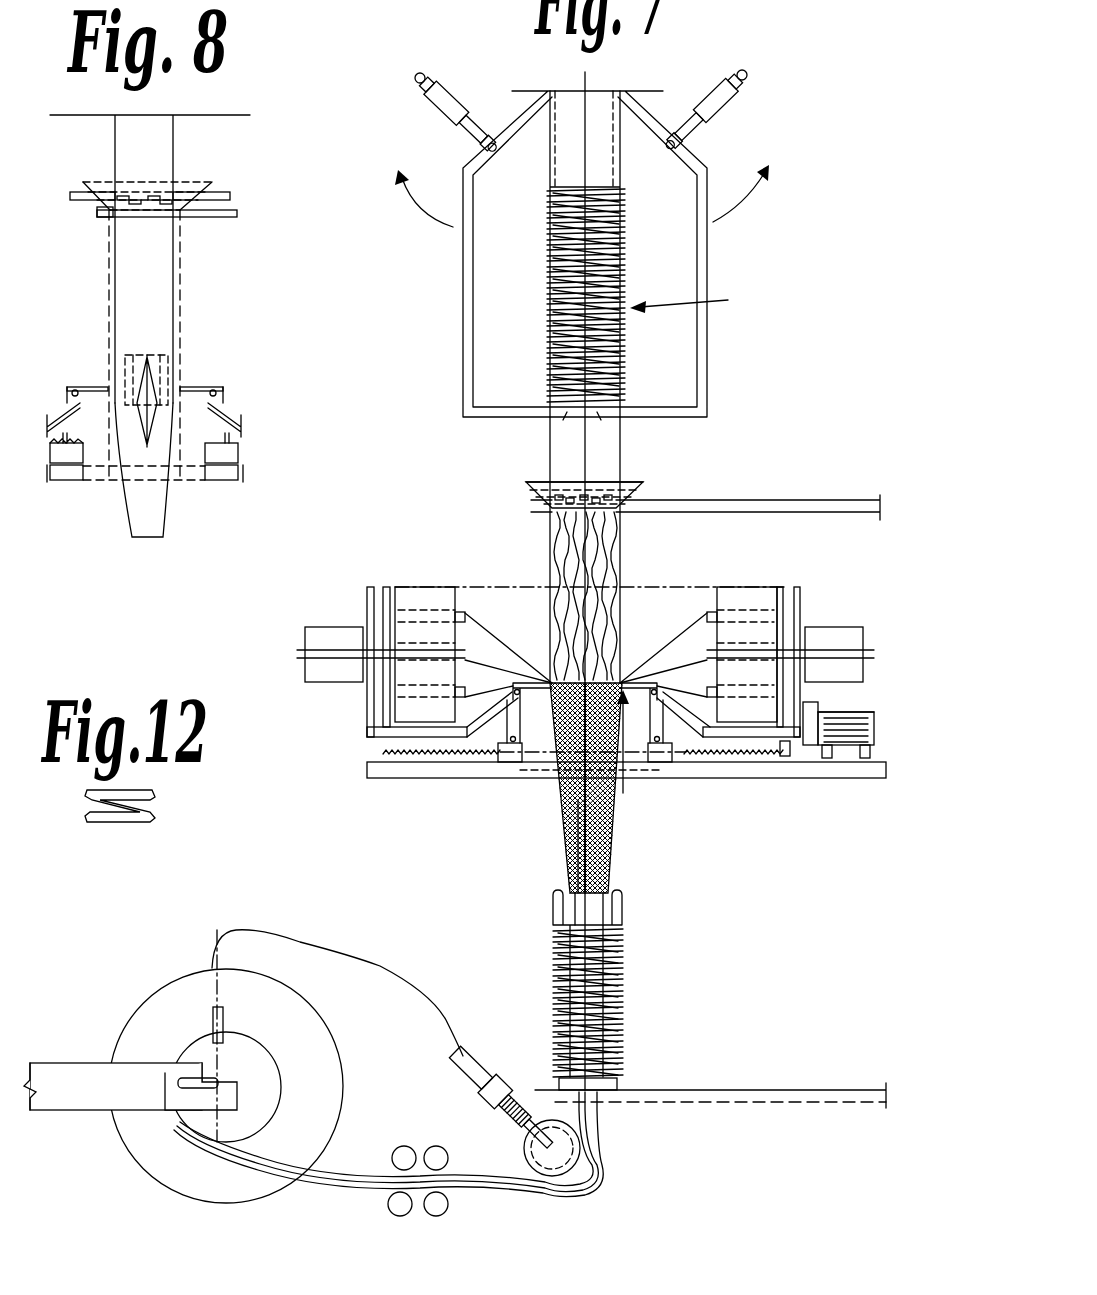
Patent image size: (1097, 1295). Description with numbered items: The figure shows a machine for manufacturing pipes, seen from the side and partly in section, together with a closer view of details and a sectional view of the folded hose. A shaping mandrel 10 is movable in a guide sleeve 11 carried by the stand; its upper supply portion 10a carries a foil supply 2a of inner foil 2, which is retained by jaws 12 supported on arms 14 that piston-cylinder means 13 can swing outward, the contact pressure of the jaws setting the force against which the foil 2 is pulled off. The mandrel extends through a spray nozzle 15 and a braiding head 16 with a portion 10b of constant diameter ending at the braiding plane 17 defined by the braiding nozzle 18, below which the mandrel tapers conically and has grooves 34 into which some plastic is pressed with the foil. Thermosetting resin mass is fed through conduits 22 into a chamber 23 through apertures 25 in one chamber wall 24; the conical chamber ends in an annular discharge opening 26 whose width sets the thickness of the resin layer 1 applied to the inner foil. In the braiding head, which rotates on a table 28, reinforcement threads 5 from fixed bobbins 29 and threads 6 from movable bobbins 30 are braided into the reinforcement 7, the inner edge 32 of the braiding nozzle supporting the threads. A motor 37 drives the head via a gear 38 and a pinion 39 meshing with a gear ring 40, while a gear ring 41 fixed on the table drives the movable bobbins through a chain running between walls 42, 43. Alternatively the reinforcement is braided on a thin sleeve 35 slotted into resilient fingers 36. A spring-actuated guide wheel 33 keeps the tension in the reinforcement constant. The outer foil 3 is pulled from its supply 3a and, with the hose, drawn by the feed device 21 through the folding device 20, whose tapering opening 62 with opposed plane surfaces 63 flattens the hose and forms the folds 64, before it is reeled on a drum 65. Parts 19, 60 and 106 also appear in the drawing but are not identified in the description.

In FIG. 7, the thermosetting resin layer 1 is at (597, 536).
In FIG. 7, the inner foil 2 is at (618, 436).
In FIG. 7, the foil supply 2a is at (692, 300).
In FIG. 7, the outer foil 3 is at (613, 906).
In FIG. 7, the foil supply 3a is at (622, 948).
In FIG. 7, the reinforcement threads 5 is at (484, 660).
In FIG. 7, the reinforcement threads 6 is at (468, 615).
In FIG. 7, the fabric reinforcement 7 is at (567, 782).
In FIG. 7, the shaping mandrel 10 is at (603, 452).
In FIG. 8, the shaping mandrel 10 is at (183, 147).
In FIG. 7, the upper portion of mandrel 10a is at (623, 238).
In FIG. 7, the mandrel portion of constant diameter 10b is at (594, 581).
In FIG. 7, the guide sleeve 11 is at (598, 108).
In FIG. 7, the jaws 12 is at (567, 412).
In FIG. 7, the piston-cylinder means 13 is at (440, 80).
In FIG. 7, the arms 14 is at (702, 257).
In FIG. 7, the spray nozzle 15 is at (655, 479).
In FIG. 7, the braiding head 16 is at (728, 581).
In FIG. 7, the braiding plane 17 is at (635, 751).
In FIG. 7, the braiding nozzle 18 is at (524, 762).
In FIG. 8, the braiding nozzle 18 is at (197, 388).
In FIG. 7, the bobbin base 19 is at (622, 1078).
In FIG. 7, the hose folding device 20 is at (640, 904).
In FIG. 7, the feed device 21 is at (423, 1134).
In FIG. 7, the conduits 22 is at (553, 479).
In FIG. 8, the conduits 22 is at (70, 194).
In FIG. 8, the chamber 23 is at (180, 205).
In FIG. 8, the chamber wall 24 is at (185, 212).
In FIG. 8, the apertures 25 is at (130, 195).
In FIG. 8, the annular discharge opening 26 is at (108, 217).
In FIG. 7, the table 28 is at (752, 778).
In FIG. 7, the thread bobbins 29 is at (830, 627).
In FIG. 7, the thread bobbins 30 is at (731, 716).
In FIG. 8, the inner edge 32 is at (108, 388).
In FIG. 7, the spring-actuated guide wheel 33 is at (567, 1187).
In FIG. 8, the grooves 34 is at (147, 410).
In FIG. 8, the thin sleeve 35 is at (237, 301).
In FIG. 8, the resilient fingers 36 is at (184, 485).
In FIG. 7, the motor 37 is at (852, 758).
In FIG. 7, the gear 38 is at (835, 712).
In FIG. 7, the pinion 39 is at (812, 745).
In FIG. 7, the gear ring 40 is at (806, 760).
In FIG. 7, the gear ring 41 is at (404, 762).
In FIG. 7, the wall 42 is at (388, 587).
In FIG. 7, the wall 43 is at (370, 587).
In FIG. 7, the actuator rod 60 is at (300, 652).
In FIG. 7, the tapering through opening 62 is at (563, 873).
In FIG. 7, the plane surfaces 63 is at (625, 971).
In FIG. 12, the folds 64 is at (145, 806).
In FIG. 7, the drum 65 is at (322, 1052).
In FIG. 8, the tube 106 is at (160, 266).